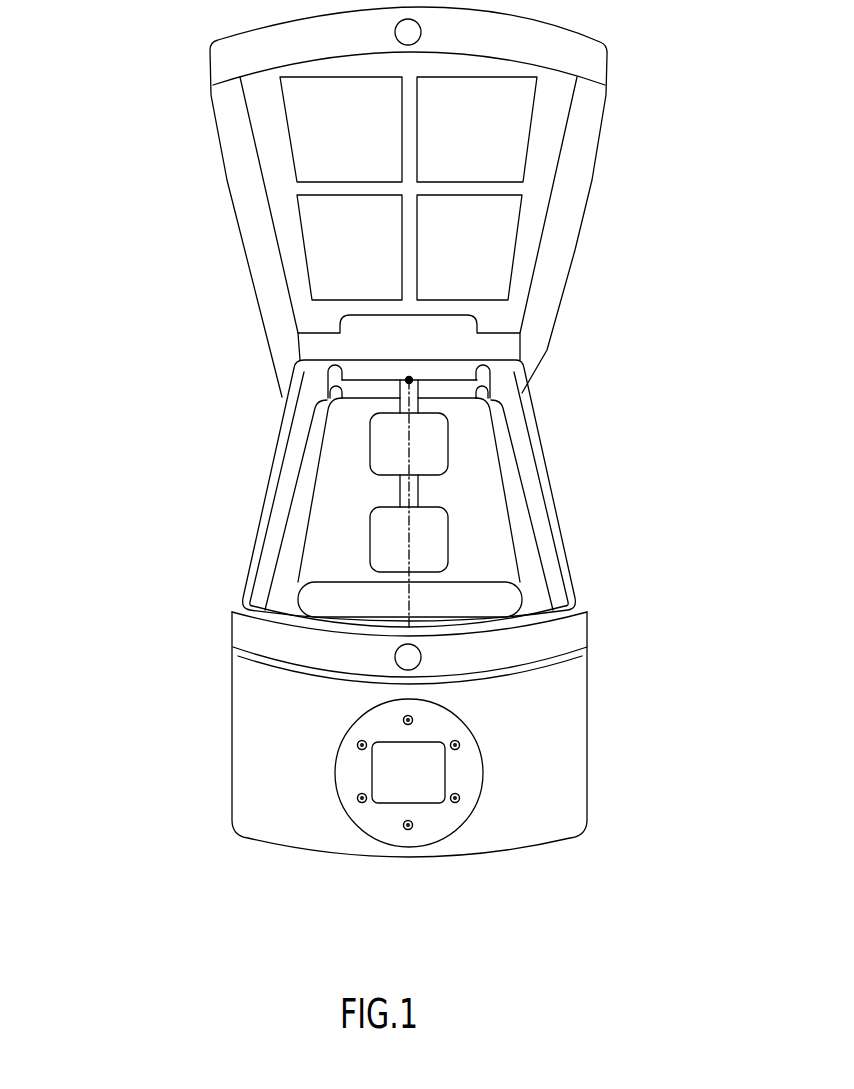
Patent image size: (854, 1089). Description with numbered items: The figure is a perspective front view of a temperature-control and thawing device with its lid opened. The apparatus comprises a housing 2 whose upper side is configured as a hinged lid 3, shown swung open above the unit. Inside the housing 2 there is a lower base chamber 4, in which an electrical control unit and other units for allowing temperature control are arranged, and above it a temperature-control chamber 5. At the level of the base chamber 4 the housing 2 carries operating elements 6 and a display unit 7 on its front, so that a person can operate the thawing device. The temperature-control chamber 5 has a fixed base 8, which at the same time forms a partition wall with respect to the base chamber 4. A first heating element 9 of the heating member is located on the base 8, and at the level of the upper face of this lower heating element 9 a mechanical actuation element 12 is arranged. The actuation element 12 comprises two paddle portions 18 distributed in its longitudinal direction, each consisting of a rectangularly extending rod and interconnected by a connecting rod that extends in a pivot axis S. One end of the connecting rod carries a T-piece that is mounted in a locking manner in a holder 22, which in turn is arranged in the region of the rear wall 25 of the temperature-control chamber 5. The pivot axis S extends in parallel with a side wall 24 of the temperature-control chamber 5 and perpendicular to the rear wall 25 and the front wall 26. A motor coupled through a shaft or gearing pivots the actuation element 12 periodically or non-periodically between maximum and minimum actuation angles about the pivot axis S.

The housing 2 is at (397, 472).
The hinged lid 3 is at (570, 176).
The lower base chamber 4 is at (643, 715).
The temperature-control chamber 5 is at (638, 543).
The operating elements 6 is at (455, 803).
The display unit 7 is at (390, 783).
The fixed base 8 is at (525, 547).
The first heating element 9 is at (472, 493).
The mechanical actuation element 12 is at (304, 477).
The paddle portions 18 is at (360, 440).
The holder 22 is at (405, 379).
The side wall 24 is at (270, 463).
The rear wall 25 is at (494, 326).
The front wall 26 is at (493, 637).
The pivot axis S is at (410, 445).